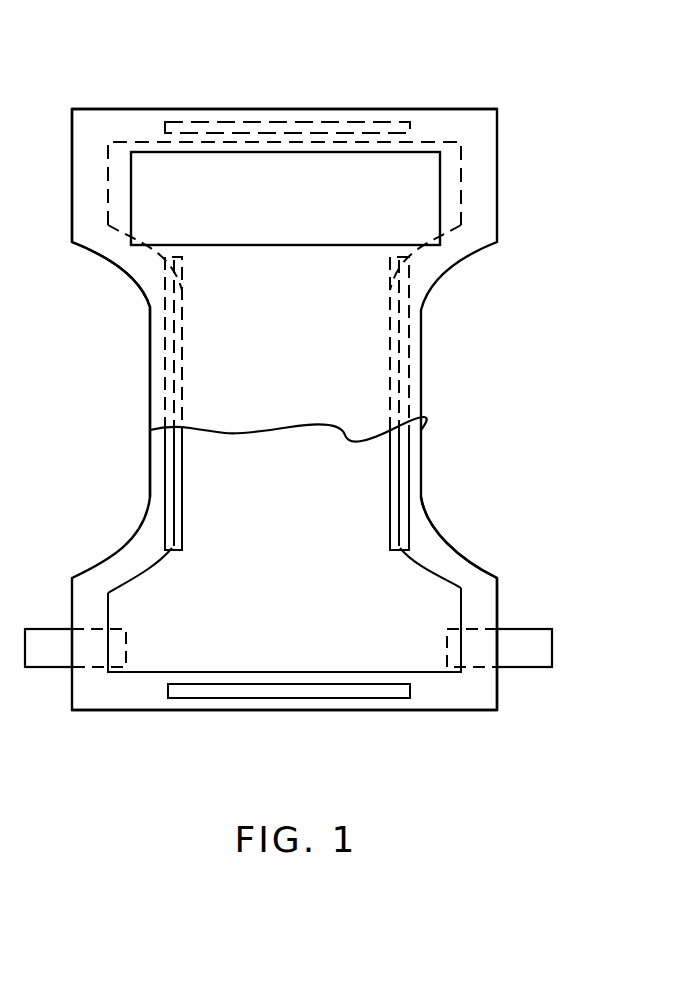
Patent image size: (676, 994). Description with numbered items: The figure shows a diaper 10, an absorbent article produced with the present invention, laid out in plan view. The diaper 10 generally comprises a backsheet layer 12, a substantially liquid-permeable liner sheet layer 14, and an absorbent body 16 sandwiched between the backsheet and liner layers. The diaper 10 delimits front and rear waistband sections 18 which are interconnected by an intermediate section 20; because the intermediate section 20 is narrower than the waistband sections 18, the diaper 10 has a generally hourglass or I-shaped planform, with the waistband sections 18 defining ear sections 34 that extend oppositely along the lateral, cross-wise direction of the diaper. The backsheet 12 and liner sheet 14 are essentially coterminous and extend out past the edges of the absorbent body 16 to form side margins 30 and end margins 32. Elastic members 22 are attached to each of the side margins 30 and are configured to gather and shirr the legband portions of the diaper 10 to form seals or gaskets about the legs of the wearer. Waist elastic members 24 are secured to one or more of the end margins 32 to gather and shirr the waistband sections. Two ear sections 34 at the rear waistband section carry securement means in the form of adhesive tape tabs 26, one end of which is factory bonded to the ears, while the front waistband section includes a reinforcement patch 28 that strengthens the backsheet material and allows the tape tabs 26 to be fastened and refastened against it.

The diaper 10 is at (509, 72).
The backsheet layer 12 is at (278, 404).
The liner sheet layer 14 is at (425, 537).
The absorbent body 16 is at (292, 581).
The waistband sections 18 is at (163, 108).
The intermediate section 20 is at (150, 388).
The elastic members 22 is at (169, 475).
The waist elastic members 24 is at (272, 108).
The adhesive tape tabs 26 is at (53, 628).
The reinforcement patch 28 is at (268, 208).
The side margins 30 is at (155, 319).
The end margins 32 is at (443, 108).
The ear sections 34 is at (72, 190).